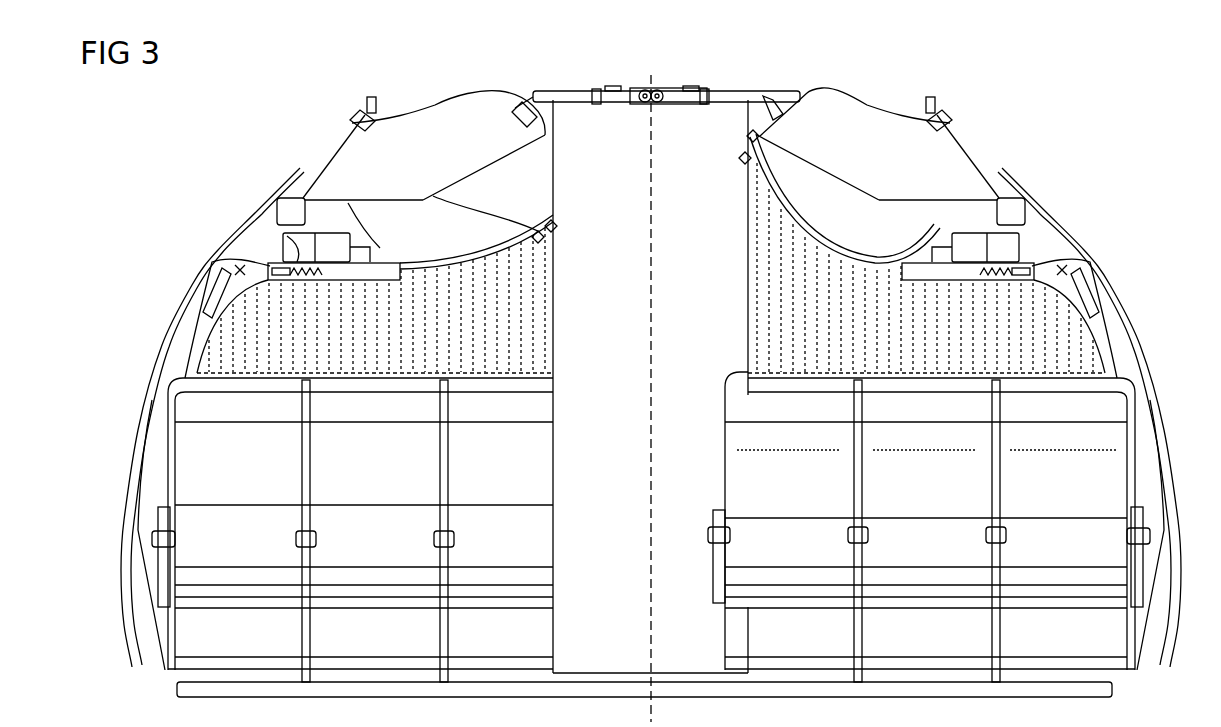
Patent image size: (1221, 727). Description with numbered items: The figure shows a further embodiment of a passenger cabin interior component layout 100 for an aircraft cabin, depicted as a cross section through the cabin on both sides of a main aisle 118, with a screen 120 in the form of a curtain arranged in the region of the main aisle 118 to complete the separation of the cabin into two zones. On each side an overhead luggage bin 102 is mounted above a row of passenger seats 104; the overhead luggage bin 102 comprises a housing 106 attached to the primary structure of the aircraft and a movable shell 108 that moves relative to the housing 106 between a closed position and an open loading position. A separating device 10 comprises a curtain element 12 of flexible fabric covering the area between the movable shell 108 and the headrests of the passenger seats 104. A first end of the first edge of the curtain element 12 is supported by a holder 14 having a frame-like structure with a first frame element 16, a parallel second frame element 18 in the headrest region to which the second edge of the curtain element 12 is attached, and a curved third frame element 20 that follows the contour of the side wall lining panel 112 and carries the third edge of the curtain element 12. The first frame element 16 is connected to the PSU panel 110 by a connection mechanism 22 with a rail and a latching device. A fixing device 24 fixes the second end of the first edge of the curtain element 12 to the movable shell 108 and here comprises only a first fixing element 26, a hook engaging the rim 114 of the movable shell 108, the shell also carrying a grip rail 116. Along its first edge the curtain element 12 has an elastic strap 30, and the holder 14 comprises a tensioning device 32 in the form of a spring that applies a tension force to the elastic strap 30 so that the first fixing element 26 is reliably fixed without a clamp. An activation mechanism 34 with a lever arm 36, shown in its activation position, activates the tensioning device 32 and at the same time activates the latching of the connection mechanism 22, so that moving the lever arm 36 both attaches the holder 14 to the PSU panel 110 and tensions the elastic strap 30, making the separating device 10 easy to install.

The separating device 10 is at (155, 321).
The curtain element 12 is at (388, 357).
The holder 14 is at (235, 271).
The first frame element 16 is at (342, 282).
The second frame element 18 is at (258, 396).
The third frame element 20 is at (196, 350).
The connection mechanism 22 is at (315, 245).
The fixing device 24 is at (530, 240).
The first fixing element 26 is at (558, 230).
The elastic strap 30 is at (411, 262).
The tensioning device 32 is at (311, 290).
The activation mechanism 34 is at (275, 290).
The lever arm 36 is at (257, 247).
The passenger cabin interior component layout 100 is at (232, 155).
The overhead luggage bin 102 is at (360, 155).
The passenger seats 104 is at (240, 583).
The housing 106 is at (437, 116).
The movable shell 108 is at (497, 230).
The PSU panel 110 is at (254, 228).
The side wall lining panel 112 is at (210, 297).
The rim 114 is at (553, 217).
The grip rail 116 is at (432, 263).
The main aisle 118 is at (562, 540).
The screen 120 is at (628, 118).